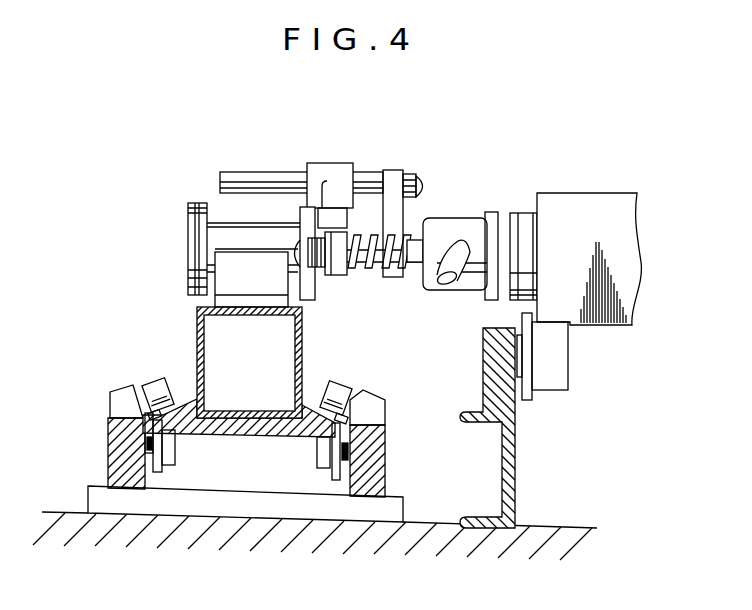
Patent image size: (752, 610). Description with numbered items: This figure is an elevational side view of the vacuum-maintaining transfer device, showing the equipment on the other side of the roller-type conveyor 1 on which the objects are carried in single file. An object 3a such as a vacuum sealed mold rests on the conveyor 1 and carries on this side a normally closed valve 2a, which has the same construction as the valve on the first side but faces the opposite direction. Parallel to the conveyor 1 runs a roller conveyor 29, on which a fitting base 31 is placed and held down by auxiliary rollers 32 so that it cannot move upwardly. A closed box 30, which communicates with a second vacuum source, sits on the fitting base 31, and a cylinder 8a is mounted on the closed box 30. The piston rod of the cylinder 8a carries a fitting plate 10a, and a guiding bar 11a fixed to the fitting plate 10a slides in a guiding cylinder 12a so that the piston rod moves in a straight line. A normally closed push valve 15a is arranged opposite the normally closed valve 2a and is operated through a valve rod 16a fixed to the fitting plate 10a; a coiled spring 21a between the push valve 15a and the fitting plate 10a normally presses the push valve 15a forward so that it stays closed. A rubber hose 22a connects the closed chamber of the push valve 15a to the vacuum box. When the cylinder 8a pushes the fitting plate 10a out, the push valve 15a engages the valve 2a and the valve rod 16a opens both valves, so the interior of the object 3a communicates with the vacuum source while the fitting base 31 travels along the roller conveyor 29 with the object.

The roller-type conveyor 1 is at (515, 463).
The normally closed valve 2a is at (525, 213).
The object 3a is at (583, 200).
The cylinder 8a is at (191, 215).
The fitting plate 10a is at (395, 172).
The guiding bar 11a is at (247, 180).
The guiding cylinder 12a is at (335, 167).
The normally closed push valve 15a is at (458, 219).
The valve rod 16a is at (368, 270).
The coiled spring 21a is at (388, 272).
The rubber hose 22a is at (462, 291).
The roller conveyor 29 is at (384, 462).
The closed box 30 is at (303, 330).
The fitting base 31 is at (240, 434).
The auxiliary rollers 32 is at (152, 386).